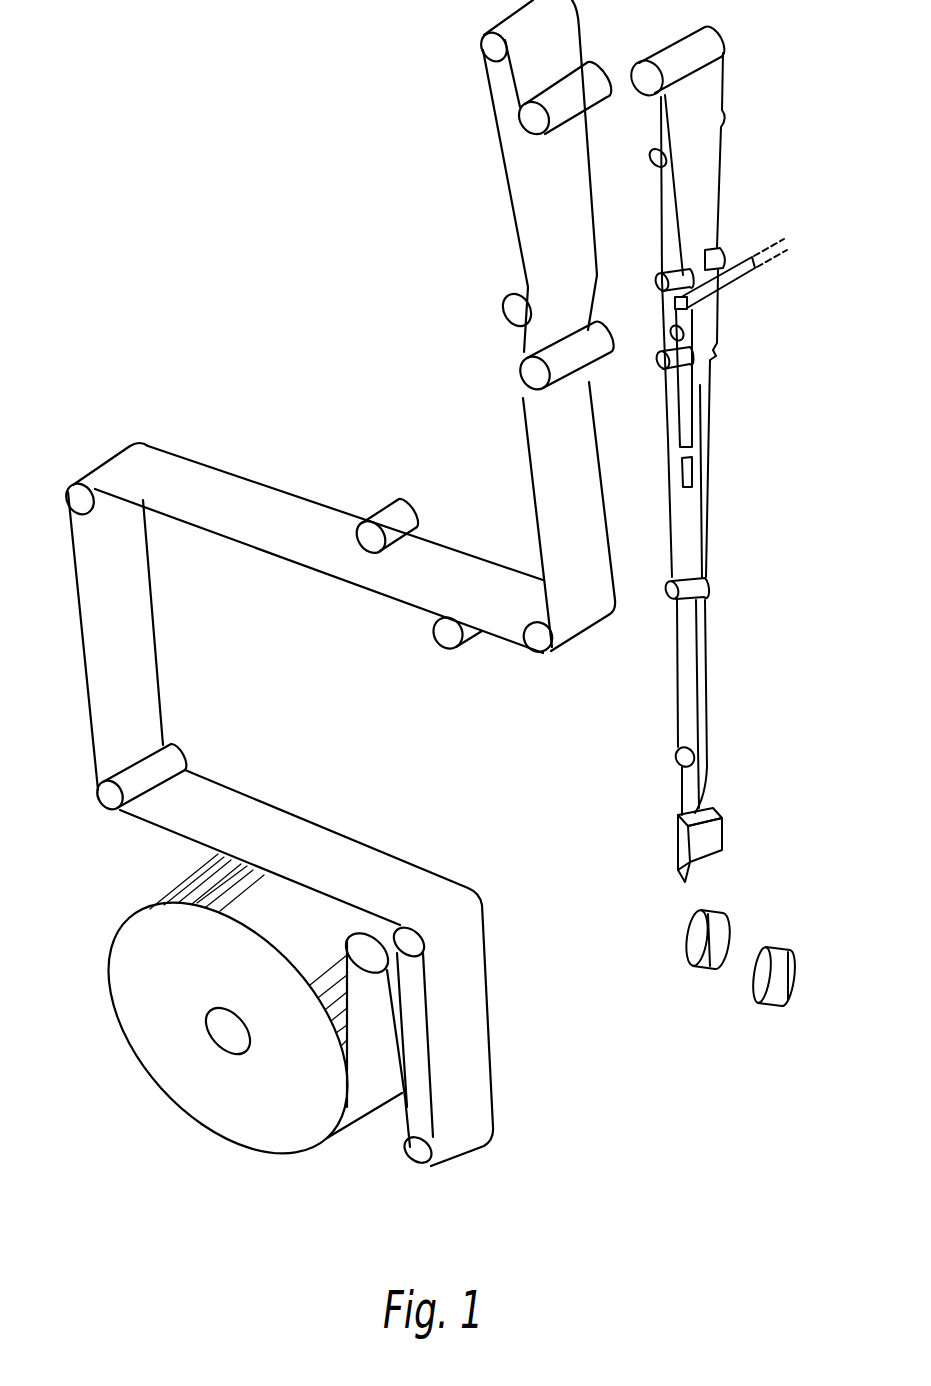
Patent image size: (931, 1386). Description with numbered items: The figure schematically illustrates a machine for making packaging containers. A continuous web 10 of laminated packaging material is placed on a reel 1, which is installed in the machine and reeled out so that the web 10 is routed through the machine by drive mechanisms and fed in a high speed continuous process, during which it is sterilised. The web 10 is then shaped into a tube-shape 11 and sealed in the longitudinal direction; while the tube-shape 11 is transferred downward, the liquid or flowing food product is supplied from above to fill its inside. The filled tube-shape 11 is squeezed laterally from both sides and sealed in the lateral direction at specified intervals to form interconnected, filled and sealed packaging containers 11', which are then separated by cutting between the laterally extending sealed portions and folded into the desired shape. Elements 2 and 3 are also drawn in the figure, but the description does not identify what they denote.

The reel 1 is at (133, 955).
The web strip 2 is at (735, 243).
The band 3 is at (718, 280).
The web 10 is at (132, 460).
The tube-shape 11 is at (708, 421).
The packaging containers 11' is at (746, 897).